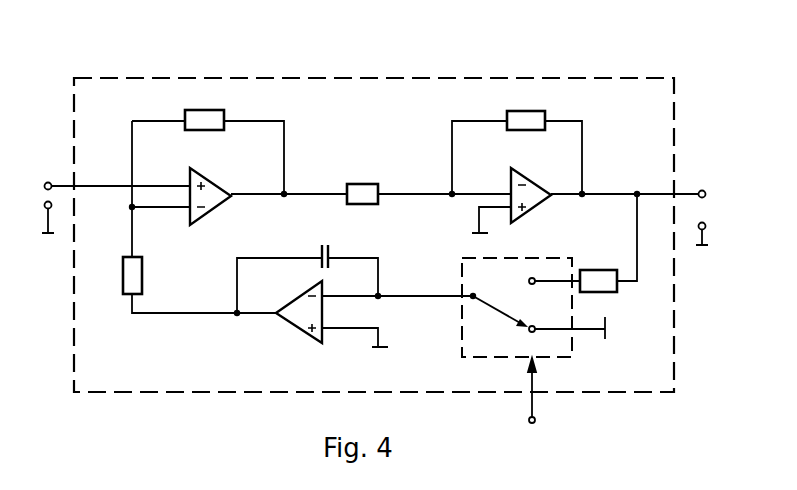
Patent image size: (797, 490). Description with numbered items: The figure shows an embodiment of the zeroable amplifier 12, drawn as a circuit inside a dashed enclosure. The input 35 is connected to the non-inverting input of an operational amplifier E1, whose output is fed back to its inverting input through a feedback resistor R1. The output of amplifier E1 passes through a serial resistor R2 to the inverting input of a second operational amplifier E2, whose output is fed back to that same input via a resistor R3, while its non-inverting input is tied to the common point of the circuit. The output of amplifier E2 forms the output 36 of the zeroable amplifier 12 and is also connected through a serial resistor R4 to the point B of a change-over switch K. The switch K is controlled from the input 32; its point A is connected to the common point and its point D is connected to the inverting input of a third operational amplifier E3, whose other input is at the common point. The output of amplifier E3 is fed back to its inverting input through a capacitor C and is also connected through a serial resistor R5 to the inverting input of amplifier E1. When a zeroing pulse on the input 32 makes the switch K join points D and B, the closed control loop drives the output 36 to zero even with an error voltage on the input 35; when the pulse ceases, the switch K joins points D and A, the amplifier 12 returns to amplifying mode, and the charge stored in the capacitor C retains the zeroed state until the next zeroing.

The zeroable amplifier 12 is at (596, 95).
The input 35 is at (47, 191).
The output 36 is at (702, 208).
The input 32 is at (540, 418).
The feedback resistor R1 is at (213, 118).
The serial resistor R2 is at (368, 192).
The resistor R3 is at (537, 118).
The serial resistor R4 is at (612, 272).
The serial resistor R5 is at (123, 278).
The operational amplifier E1 is at (218, 203).
The operational amplifier E2 is at (534, 203).
The operational amplifier E3 is at (297, 313).
The capacitor C is at (320, 252).
The change-over switch K is at (517, 295).
The point A is at (504, 326).
The point B is at (523, 272).
The point D is at (472, 284).